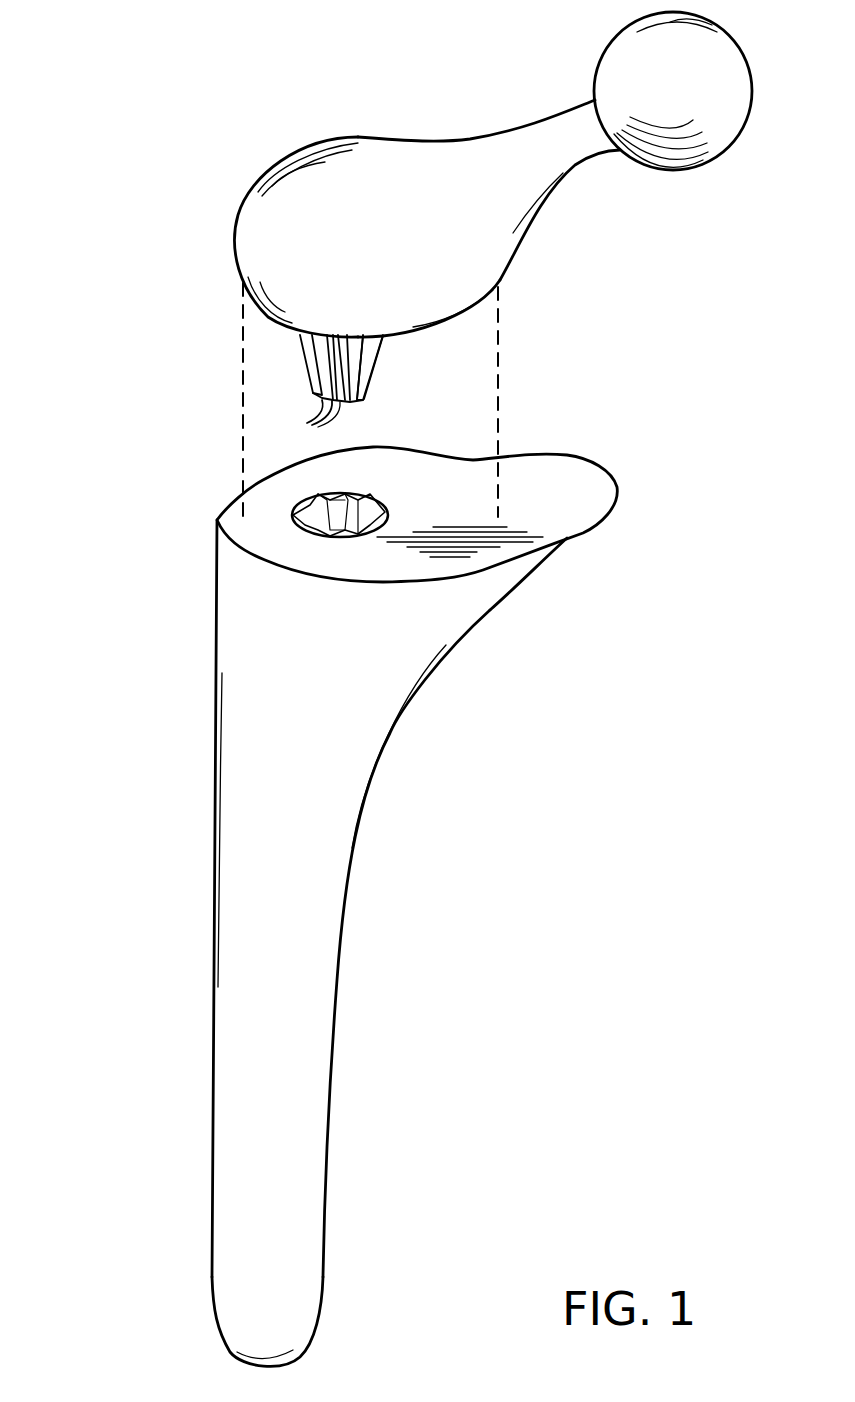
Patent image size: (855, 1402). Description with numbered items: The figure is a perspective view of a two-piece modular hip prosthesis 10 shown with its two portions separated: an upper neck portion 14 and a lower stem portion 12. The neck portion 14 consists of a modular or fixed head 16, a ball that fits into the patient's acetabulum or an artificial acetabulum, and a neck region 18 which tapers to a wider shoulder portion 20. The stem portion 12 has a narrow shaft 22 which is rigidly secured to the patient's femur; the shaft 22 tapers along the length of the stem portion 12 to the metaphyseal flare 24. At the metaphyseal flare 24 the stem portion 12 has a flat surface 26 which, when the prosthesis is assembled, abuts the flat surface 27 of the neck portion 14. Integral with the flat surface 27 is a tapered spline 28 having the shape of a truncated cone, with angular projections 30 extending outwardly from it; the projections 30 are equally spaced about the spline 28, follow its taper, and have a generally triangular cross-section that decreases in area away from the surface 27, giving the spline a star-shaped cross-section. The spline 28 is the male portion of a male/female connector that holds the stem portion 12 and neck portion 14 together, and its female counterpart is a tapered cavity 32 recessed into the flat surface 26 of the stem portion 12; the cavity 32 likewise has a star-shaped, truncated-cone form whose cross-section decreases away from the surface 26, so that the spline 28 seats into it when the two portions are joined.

The hip prosthesis 10 is at (103, 1041).
The stem portion 12 is at (336, 897).
The neck portion 14 is at (507, 247).
The head 16 is at (737, 112).
The neck region 18 is at (556, 128).
The shoulder portion 20 is at (400, 320).
The shaft 22 is at (313, 1247).
The metaphyseal flare 24 is at (547, 547).
The flat surface 26 is at (433, 463).
The flat surface 27 is at (397, 337).
The tapered spline 28 is at (306, 349).
The projections 30 is at (330, 410).
The tapered cavity 32 is at (358, 497).